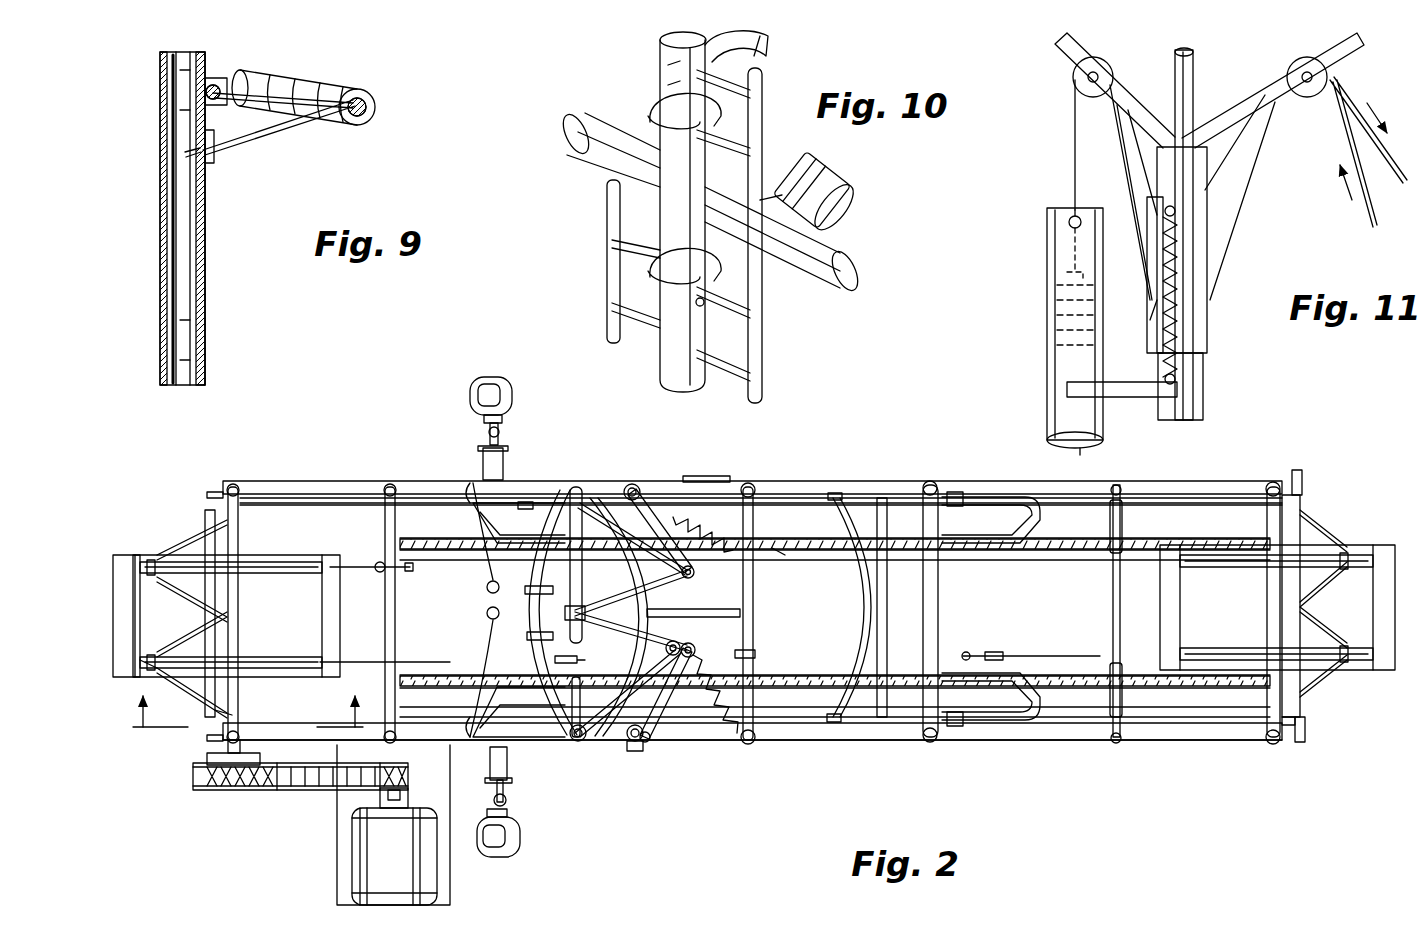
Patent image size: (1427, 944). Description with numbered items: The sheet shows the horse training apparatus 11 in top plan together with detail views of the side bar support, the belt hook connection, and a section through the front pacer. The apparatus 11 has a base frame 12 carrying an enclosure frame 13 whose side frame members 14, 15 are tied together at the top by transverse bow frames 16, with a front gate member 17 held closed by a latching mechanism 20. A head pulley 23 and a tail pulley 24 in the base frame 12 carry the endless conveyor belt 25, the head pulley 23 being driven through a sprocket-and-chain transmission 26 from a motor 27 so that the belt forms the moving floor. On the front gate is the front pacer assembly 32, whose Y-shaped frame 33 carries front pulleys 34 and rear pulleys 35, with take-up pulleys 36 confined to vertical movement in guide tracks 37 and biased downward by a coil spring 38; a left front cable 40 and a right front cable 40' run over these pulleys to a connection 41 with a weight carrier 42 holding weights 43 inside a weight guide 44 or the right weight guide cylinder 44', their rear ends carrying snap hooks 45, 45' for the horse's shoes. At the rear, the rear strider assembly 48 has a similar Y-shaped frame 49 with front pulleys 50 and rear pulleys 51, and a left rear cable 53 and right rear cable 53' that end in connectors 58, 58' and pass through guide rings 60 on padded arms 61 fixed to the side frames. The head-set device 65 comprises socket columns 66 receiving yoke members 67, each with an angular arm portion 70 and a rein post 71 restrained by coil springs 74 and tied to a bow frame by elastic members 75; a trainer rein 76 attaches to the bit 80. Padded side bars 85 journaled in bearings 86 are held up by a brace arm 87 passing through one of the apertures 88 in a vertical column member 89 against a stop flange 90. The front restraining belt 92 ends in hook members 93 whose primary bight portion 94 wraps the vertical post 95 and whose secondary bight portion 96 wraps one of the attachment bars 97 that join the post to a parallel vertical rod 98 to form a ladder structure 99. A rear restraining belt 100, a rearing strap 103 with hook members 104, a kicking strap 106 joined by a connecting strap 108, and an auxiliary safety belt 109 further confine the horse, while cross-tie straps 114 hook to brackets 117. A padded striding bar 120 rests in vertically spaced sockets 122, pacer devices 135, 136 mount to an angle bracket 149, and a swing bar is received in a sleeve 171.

In FIG. 2, the apparatus 11 is at (1335, 792).
In FIG. 2, the base frame 12 is at (915, 741).
In FIG. 2, the enclosure frame 13 is at (1212, 470).
In FIG. 2, the side frame member 14 is at (1060, 740).
In FIG. 10, the side frame member 15 is at (592, 160).
In FIG. 2, the side frame member 15 is at (985, 490).
In FIG. 2, the transverse bow frames 16 is at (578, 490).
In FIG. 11, the front gate member 17 is at (1195, 388).
In FIG. 2, the latching mechanism 20 is at (207, 505).
In FIG. 2, the head pulley 23 is at (233, 716).
In FIG. 2, the tail pulley 24 is at (1305, 729).
In FIG. 2, the endless conveyor belt 25 is at (1058, 616).
In FIG. 2, the sprocket-and-chain transmission 26 is at (320, 791).
In FIG. 2, the motor 27 is at (377, 857).
In FIG. 11, the front pacer assembly 32 is at (1230, 62).
In FIG. 2, the front pacer assembly 32 is at (118, 532).
In FIG. 11, the Y-shaped frame 33 is at (1187, 133).
In FIG. 2, the Y-shaped frame 33 is at (140, 557).
In FIG. 11, the front pulleys 34 is at (1075, 88).
In FIG. 2, the front pulleys 34 is at (190, 657).
In FIG. 11, the rear pulleys 35 is at (1328, 86).
In FIG. 2, the rear pulleys 35 is at (307, 657).
In FIG. 11, the take-up pulleys 36 is at (1210, 276).
In FIG. 11, the guide tracks 37 is at (1180, 346).
In FIG. 11, the coil spring 38 is at (1163, 290).
In FIG. 11, the left front cable 40 is at (1363, 165).
In FIG. 2, the left front cable 40 is at (385, 644).
In FIG. 2, the right front cable 40' is at (370, 543).
In FIG. 11, the connection 41 is at (1065, 232).
In FIG. 11, the weight carrier 42 is at (1058, 264).
In FIG. 11, the weights 43 is at (1052, 326).
In FIG. 11, the vertical cylindrical weight guide 44 is at (1050, 324).
In FIG. 2, the vertical cylindrical weight guide 44 is at (127, 685).
In FIG. 11, the right front weight guide cylinder 44' is at (1048, 435).
In FIG. 2, the snap hook 45 is at (585, 663).
In FIG. 2, the snap hook 45' is at (416, 578).
In FIG. 2, the rear strider assembly 48 is at (1348, 508).
In FIG. 2, the Y-shaped frame 49 is at (1250, 552).
In FIG. 2, the front pulleys 50 is at (1183, 590).
In FIG. 2, the rear pulleys 51 is at (1335, 576).
In FIG. 2, the left rear cable 53 is at (1010, 695).
In FIG. 2, the right rear cable 53' is at (1016, 526).
In FIG. 2, the connectors 58 is at (1031, 640).
In FIG. 2, the connectors 58' is at (703, 531).
In FIG. 2, the guide rings 60 is at (1117, 566).
In FIG. 2, the padded arms 61 is at (1122, 527).
In FIG. 2, the head-set device 65 is at (666, 480).
In FIG. 2, the vertical socket columns 66 is at (650, 762).
In FIG. 2, the yoke member 67 is at (697, 703).
In FIG. 2, the angular arm portion 70 is at (694, 652).
In FIG. 2, the rein post 71 is at (672, 613).
In FIG. 2, the coil springs 74 is at (748, 487).
In FIG. 2, the elastic linear members 75 is at (636, 592).
In FIG. 2, the trainer rein 76 is at (674, 636).
In FIG. 2, the bit 80 is at (536, 588).
In FIG. 9, the padded side bars 85 is at (325, 82).
In FIG. 2, the padded side bars 85 is at (963, 656).
In FIG. 9, the bearing 86 is at (215, 78).
In FIG. 2, the bearing 86 is at (527, 500).
In FIG. 9, the brace arm 87 is at (262, 130).
In FIG. 2, the brace arm 87 is at (583, 740).
In FIG. 9, the apertures 88 is at (178, 137).
In FIG. 9, the vertical column member 89 is at (207, 347).
In FIG. 9, the stop flange 90 is at (213, 163).
In FIG. 10, the front padded restraining belt 92 is at (828, 186).
In FIG. 2, the front padded restraining belt 92 is at (530, 611).
In FIG. 10, the hook member 93 is at (620, 300).
In FIG. 10, the primary bight portion 94 is at (651, 270).
In FIG. 10, the vertical post 95 is at (660, 368).
In FIG. 10, the rung 96 is at (735, 282).
In FIG. 10, the horizontal attachment bars 97 is at (735, 364).
In FIG. 10, the parallel vertical rod 98 is at (760, 400).
In FIG. 10, the ladder structure 99 is at (785, 332).
In FIG. 2, the rear restraining belt 100 is at (858, 610).
In FIG. 10, the padded rearing strap 103 is at (768, 56).
In FIG. 2, the padded rearing strap 103 is at (604, 522).
In FIG. 10, the hook members 104 is at (650, 105).
In FIG. 2, the padded kicking strap 106 is at (757, 655).
In FIG. 2, the connecting strap 108 is at (741, 614).
In FIG. 2, the auxiliary rear safety belt 109 is at (878, 502).
In FIG. 2, the cross-tie straps 114 is at (478, 548).
In FIG. 2, the hook-shaped brackets 117 is at (486, 460).
In FIG. 2, the padded striding bar 120 is at (652, 725).
In FIG. 2, the sockets 122 is at (636, 745).
In FIG. 2, the pacer device 135 is at (516, 400).
In FIG. 2, the pacer device 136 is at (524, 848).
In FIG. 2, the vertical angle bracket 149 is at (508, 770).
In FIG. 2, the sleeve 171 is at (690, 478).